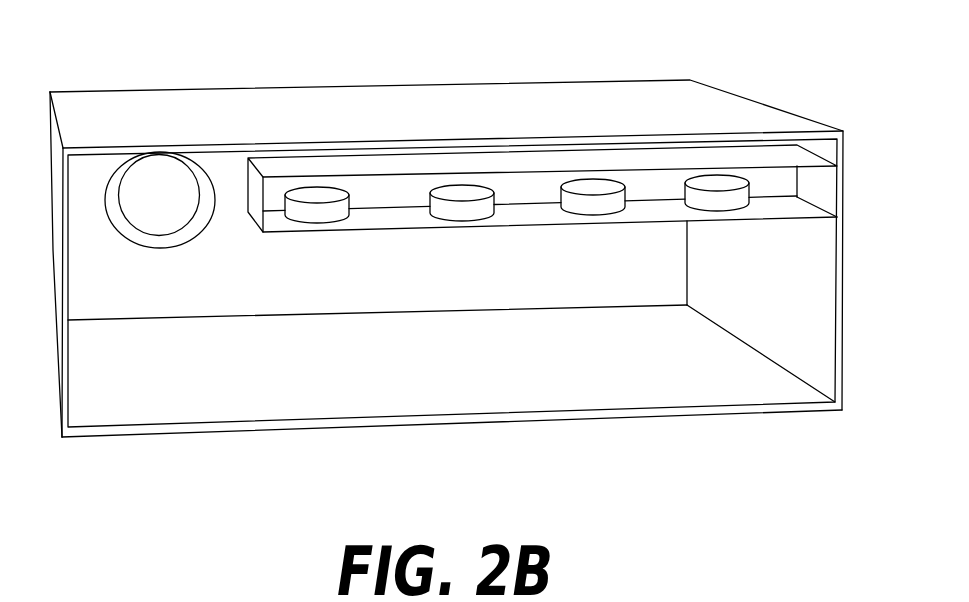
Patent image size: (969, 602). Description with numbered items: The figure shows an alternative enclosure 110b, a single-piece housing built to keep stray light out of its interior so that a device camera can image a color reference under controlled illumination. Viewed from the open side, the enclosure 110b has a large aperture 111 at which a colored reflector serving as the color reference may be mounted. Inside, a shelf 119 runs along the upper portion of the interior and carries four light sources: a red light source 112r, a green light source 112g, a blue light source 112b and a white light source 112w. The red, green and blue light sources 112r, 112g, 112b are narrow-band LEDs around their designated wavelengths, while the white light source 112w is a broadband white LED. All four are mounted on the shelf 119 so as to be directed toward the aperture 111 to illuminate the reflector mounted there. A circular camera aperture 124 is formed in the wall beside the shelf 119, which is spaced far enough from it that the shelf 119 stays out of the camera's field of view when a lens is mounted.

The enclosure 110b is at (442, 257).
The aperture 111 is at (73, 440).
The shelf 119 is at (810, 220).
The red light source 112r is at (325, 223).
The green light source 112g is at (465, 221).
The blue light source 112b is at (598, 215).
The white light source 112w is at (722, 211).
The camera aperture 124 is at (172, 235).